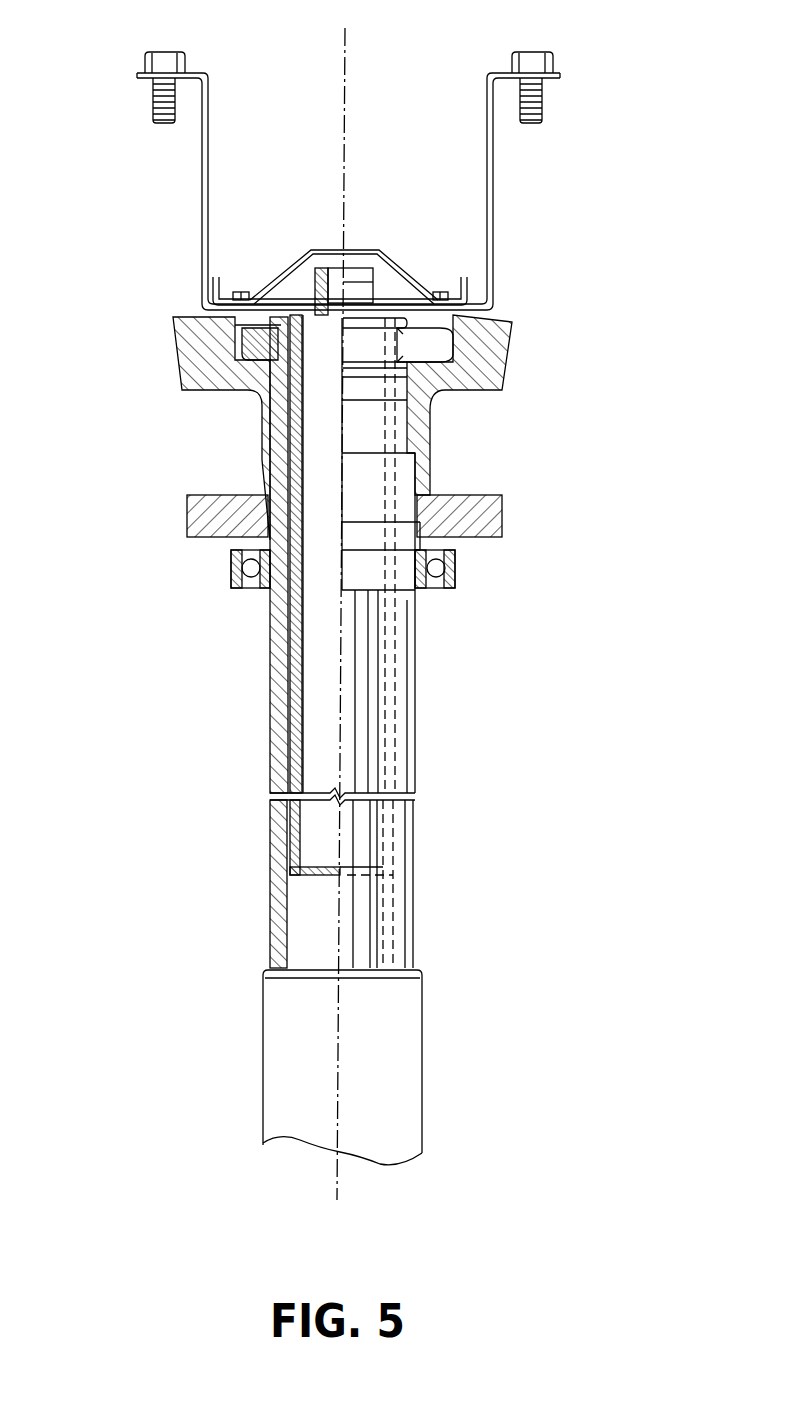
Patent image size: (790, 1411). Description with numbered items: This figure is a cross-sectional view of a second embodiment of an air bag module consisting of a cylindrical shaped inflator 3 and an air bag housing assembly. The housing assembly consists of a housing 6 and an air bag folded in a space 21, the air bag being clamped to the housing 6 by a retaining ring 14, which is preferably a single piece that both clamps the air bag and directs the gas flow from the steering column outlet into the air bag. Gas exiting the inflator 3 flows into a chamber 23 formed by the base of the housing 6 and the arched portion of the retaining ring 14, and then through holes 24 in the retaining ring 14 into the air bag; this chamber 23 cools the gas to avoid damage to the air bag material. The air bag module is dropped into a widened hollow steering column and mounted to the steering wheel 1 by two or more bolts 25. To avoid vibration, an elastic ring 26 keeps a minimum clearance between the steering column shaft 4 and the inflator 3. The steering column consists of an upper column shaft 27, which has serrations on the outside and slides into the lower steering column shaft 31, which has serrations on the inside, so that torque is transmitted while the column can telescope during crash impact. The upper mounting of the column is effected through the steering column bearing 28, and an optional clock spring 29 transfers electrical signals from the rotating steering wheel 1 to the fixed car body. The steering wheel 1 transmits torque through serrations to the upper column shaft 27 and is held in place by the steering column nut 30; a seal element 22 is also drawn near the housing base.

The steering wheel 1 is at (463, 397).
The inflator 3 is at (330, 717).
The steering column shaft 4 is at (298, 480).
The housing 6 is at (495, 175).
The retaining ring 14 is at (473, 265).
The space 21 is at (397, 151).
The seal 22 is at (235, 317).
The chamber 23 is at (302, 297).
The holes 24 is at (393, 260).
The bolts 25 is at (162, 58).
The elastic ring 26 is at (290, 842).
The upper column shaft 27 is at (415, 770).
The steering column bearing 28 is at (457, 575).
The clock spring 29 is at (418, 496).
The steering column nut 30 is at (427, 347).
The lower steering column shaft 31 is at (422, 1008).